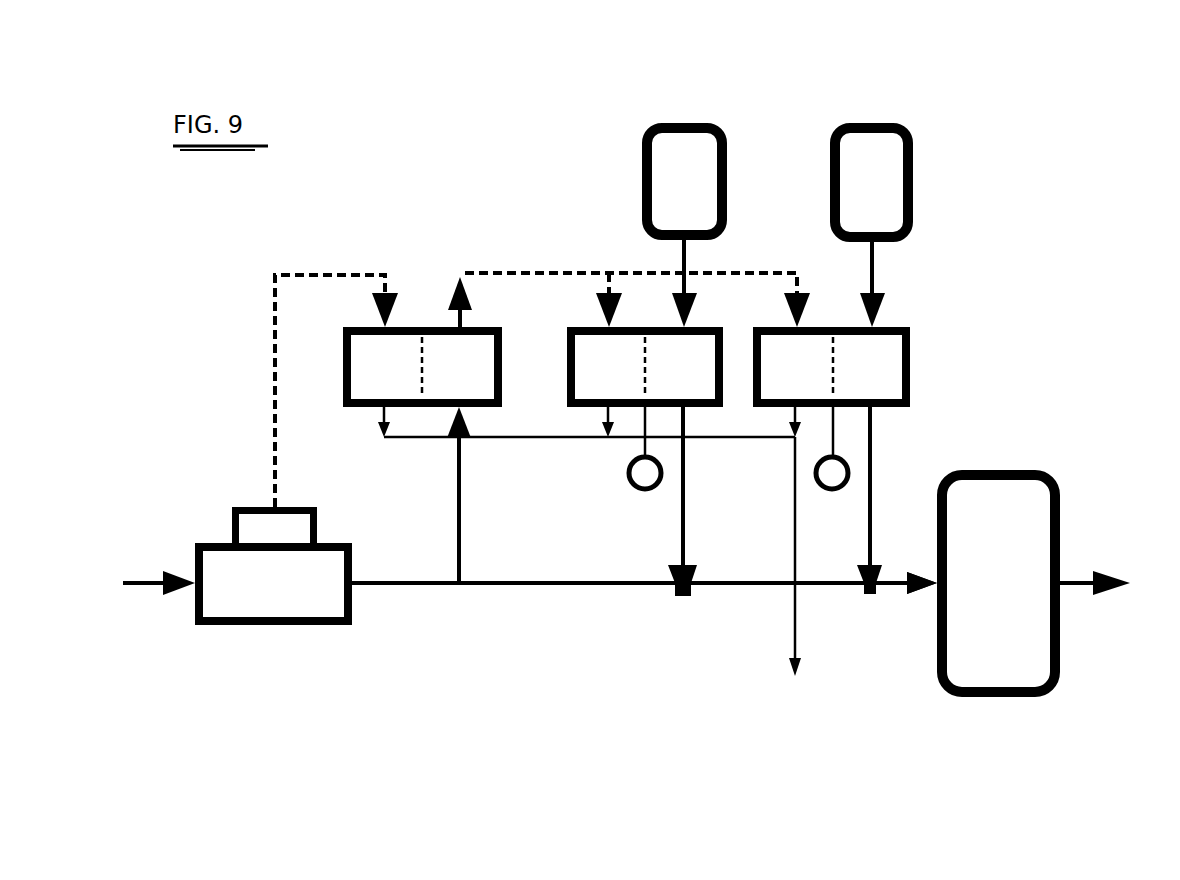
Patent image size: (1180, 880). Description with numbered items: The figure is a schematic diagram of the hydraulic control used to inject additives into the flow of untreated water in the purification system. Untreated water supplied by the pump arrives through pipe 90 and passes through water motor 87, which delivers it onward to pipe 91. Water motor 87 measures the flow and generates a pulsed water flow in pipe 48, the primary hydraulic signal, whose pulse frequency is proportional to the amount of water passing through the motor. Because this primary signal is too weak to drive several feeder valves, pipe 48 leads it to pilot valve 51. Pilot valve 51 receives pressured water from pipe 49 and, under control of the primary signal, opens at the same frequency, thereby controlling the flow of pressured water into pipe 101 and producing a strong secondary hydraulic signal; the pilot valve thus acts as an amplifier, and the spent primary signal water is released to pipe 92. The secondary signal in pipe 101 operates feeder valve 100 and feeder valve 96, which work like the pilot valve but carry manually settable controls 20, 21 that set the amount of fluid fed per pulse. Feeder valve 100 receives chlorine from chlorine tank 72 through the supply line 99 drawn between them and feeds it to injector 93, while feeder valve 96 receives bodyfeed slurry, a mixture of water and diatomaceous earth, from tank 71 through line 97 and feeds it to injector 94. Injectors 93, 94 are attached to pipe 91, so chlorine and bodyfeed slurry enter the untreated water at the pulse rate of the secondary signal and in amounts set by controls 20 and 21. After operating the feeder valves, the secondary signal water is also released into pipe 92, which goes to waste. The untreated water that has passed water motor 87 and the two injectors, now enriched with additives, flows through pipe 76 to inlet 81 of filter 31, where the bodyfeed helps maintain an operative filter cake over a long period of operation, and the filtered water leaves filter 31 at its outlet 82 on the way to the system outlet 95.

The water motor 87 is at (220, 570).
The pipe 90 is at (153, 580).
The pipe 91 is at (520, 585).
The pipe 48 is at (270, 345).
The pilot valve 51 is at (442, 343).
The pipe 101 is at (512, 272).
The feeder valve 100 is at (592, 325).
The feeder valve 96 is at (912, 327).
The chlorine tank 72 is at (678, 148).
The supply line from reservoir 72 99 is at (687, 280).
The tank 71 is at (870, 148).
The line 97 is at (873, 273).
The pipe 49 is at (455, 545).
The feeder control 20 is at (630, 487).
The feeder control 21 is at (815, 482).
The injector 93 is at (668, 585).
The injector 94 is at (866, 593).
The pipe 92 is at (793, 602).
The pipe 76 is at (890, 577).
The filter 31 is at (1008, 493).
The inlet 81 is at (937, 583).
The outlet line 95 is at (1095, 570).
The vessel outlet 82 is at (1060, 587).